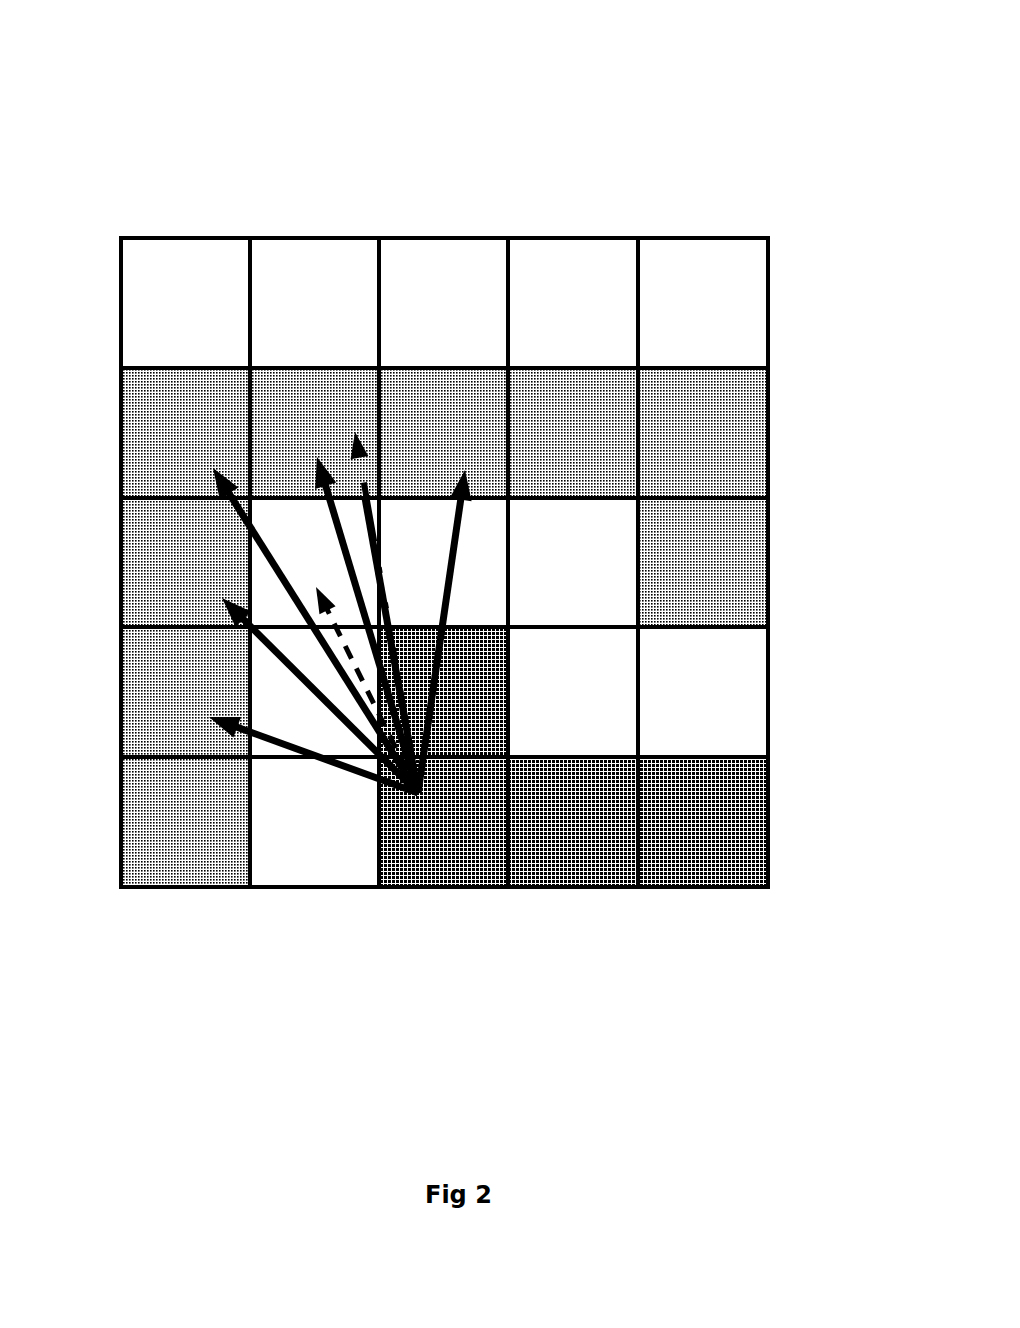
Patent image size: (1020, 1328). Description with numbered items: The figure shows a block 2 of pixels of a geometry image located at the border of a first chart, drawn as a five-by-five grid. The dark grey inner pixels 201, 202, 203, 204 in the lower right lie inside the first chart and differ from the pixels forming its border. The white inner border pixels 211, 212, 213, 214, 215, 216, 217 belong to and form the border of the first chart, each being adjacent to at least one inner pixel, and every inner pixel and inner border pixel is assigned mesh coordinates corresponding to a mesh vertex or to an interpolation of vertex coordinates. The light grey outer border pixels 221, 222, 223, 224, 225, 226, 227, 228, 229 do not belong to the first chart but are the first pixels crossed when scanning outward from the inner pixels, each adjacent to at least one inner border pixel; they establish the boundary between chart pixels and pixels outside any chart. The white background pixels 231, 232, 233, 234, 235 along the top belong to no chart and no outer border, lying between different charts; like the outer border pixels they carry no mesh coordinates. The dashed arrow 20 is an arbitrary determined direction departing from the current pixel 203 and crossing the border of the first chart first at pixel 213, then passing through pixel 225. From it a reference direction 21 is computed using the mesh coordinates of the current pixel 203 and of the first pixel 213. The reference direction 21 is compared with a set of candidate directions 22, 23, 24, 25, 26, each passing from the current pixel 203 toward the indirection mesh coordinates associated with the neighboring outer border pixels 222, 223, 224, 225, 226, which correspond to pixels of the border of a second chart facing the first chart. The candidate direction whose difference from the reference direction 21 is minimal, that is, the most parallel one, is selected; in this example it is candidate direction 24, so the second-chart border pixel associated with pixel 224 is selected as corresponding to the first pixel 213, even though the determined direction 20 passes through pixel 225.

The block of pixels 2 is at (603, 173).
The determined direction 20 is at (353, 427).
The reference direction 21 is at (317, 590).
The candidate direction 22 is at (210, 717).
The candidate direction 23 is at (225, 602).
The candidate direction 24 is at (207, 478).
The candidate direction 25 is at (310, 460).
The candidate direction 26 is at (462, 512).
The inner pixel 201 is at (703, 822).
The inner pixel 202 is at (573, 822).
The inner pixel 203 is at (443, 822).
The inner pixel 204 is at (443, 692).
The inner border pixel 211 is at (314, 822).
The inner border pixel 212 is at (314, 692).
The inner border pixel 213 is at (314, 562).
The inner border pixel 214 is at (443, 562).
The inner border pixel 215 is at (573, 562).
The inner border pixel 216 is at (573, 692).
The inner border pixel 217 is at (703, 692).
The outer border pixel 221 is at (185, 822).
The outer border pixel 222 is at (185, 692).
The outer border pixel 223 is at (185, 562).
The outer border pixel 224 is at (185, 433).
The outer border pixel 225 is at (314, 433).
The outer border pixel 226 is at (443, 433).
The outer border pixel 227 is at (573, 433).
The outer border pixel 228 is at (703, 433).
The outer border pixel 229 is at (703, 562).
The background pixel 231 is at (185, 303).
The background pixel 232 is at (314, 303).
The background pixel 233 is at (443, 303).
The background pixel 234 is at (573, 303).
The background pixel 235 is at (703, 303).